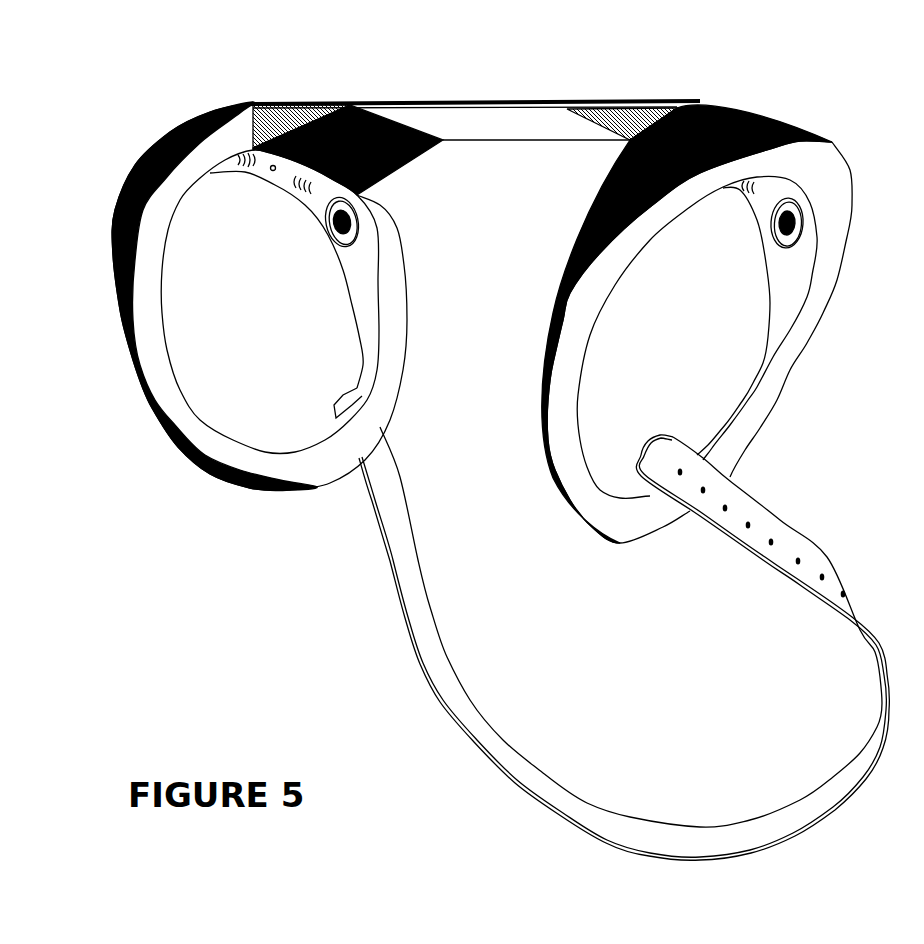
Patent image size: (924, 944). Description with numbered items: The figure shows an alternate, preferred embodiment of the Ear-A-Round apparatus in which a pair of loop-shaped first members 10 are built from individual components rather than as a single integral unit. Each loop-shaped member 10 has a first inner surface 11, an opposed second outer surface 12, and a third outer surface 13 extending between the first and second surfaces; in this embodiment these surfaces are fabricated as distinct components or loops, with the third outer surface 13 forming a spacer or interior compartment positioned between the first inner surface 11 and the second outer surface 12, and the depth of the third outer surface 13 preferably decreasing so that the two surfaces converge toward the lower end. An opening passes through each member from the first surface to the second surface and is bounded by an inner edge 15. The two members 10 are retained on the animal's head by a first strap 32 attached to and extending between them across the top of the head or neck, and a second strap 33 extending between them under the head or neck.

The first 3-dimensional loop-shaped member 10 is at (320, 540).
The first inner surface 11 is at (387, 353).
The second outer surface 12 is at (714, 306).
The third outer surface 13 is at (750, 113).
The inner edge 15 is at (785, 285).
The first strap 32 is at (470, 95).
The second strap 33 is at (442, 665).